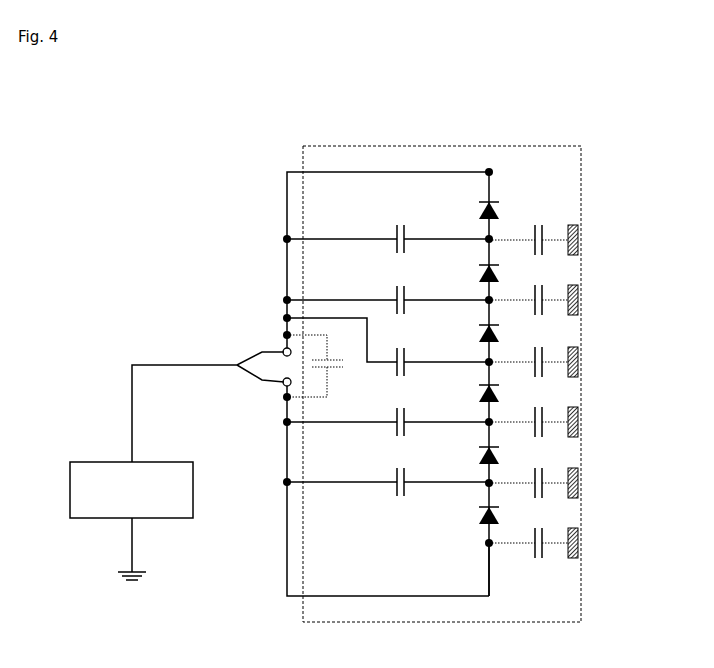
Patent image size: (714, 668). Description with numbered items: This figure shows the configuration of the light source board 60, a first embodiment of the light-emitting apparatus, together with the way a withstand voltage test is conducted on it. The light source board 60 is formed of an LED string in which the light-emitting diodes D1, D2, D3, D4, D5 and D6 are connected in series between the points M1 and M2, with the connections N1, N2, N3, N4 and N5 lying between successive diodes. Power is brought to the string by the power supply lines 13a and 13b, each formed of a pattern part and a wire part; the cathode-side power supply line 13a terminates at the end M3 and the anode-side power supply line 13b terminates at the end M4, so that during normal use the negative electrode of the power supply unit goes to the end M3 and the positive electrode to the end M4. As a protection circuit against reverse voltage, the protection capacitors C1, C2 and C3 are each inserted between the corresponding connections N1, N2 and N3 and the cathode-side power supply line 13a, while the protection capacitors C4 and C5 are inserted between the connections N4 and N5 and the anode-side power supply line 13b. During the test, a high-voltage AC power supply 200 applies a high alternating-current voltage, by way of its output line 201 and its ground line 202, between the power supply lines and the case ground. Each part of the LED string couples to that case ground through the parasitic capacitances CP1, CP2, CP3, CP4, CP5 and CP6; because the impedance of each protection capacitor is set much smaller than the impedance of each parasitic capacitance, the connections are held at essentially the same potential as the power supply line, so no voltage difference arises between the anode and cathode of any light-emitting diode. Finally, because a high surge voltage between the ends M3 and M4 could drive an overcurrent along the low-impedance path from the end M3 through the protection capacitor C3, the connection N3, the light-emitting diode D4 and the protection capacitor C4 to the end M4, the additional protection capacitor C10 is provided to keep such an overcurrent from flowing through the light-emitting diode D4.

The light source board 60 is at (452, 145).
The cathode-side power supply line 13a is at (286, 171).
The anode-side power supply line 13b is at (287, 598).
The element M1 is at (494, 171).
The element M2 is at (494, 547).
The end of power supply line 13a M3 is at (284, 349).
The end of power supply line 13b M4 is at (284, 386).
The light-emitting diode D1 is at (474, 210).
The light-emitting diode D2 is at (474, 273).
The light-emitting diode D3 is at (474, 333).
The light-emitting diode D4 is at (474, 393).
The light-emitting diode D5 is at (474, 455).
The light-emitting diode D6 is at (474, 515).
The connection N1 is at (484, 243).
The connection N2 is at (484, 304).
The copper connection N3 is at (484, 366).
The connection N4 is at (484, 426).
The connection N5 is at (484, 487).
The protection capacitor C1 is at (388, 235).
The protection capacitor C2 is at (388, 296).
The protection capacitor C3 is at (388, 347).
The protection capacitor C4 is at (388, 419).
The protection capacitor C5 is at (388, 479).
The protection capacitor C10 is at (320, 376).
The parasitic capacitance CP1 is at (545, 228).
The parasitic capacitance CP2 is at (545, 288).
The parasitic capacitance CP3 is at (545, 350).
The parasitic capacitance CP4 is at (545, 410).
The parasitic capacitance CP5 is at (545, 471).
The parasitic capacitance CP6 is at (545, 531).
The high-voltage AC power supply 200 is at (165, 461).
The output line 201 is at (170, 363).
The ground line 202 is at (135, 541).